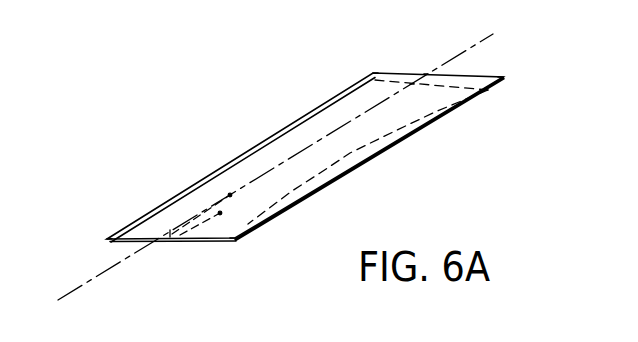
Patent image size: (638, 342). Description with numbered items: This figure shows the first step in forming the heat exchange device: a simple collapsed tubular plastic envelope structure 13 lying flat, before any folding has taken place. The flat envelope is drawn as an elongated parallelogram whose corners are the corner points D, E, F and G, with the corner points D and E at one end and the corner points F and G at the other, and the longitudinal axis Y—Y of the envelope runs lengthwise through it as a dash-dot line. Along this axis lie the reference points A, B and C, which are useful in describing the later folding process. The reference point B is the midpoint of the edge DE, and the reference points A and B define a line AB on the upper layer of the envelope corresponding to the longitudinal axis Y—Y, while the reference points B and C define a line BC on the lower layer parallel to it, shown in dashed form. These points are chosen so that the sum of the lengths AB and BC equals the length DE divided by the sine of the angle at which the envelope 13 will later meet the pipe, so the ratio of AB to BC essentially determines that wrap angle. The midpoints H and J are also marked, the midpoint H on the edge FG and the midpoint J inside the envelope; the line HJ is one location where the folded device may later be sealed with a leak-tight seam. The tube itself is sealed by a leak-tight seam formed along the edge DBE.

The collapsed tubular plastic envelope structure 13 is at (417, 144).
The longitudinal axis Y— Y is at (265, 163).
The reference point A is at (211, 204).
The reference point B is at (162, 252).
The reference point C is at (210, 218).
The corner point D is at (92, 241).
The corner point E is at (239, 255).
The corner point F is at (373, 59).
The corner point G is at (511, 76).
The midpoint H is at (424, 57).
The midpoint J is at (415, 99).